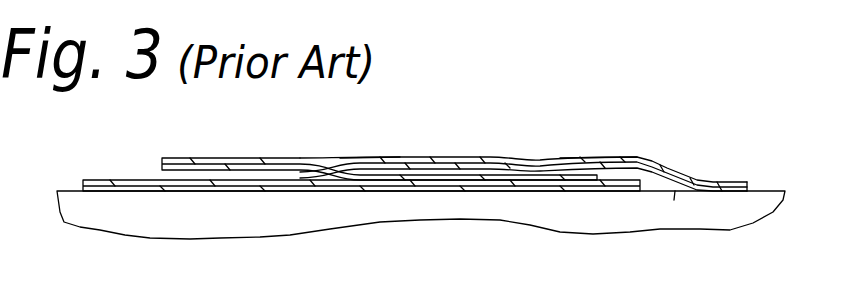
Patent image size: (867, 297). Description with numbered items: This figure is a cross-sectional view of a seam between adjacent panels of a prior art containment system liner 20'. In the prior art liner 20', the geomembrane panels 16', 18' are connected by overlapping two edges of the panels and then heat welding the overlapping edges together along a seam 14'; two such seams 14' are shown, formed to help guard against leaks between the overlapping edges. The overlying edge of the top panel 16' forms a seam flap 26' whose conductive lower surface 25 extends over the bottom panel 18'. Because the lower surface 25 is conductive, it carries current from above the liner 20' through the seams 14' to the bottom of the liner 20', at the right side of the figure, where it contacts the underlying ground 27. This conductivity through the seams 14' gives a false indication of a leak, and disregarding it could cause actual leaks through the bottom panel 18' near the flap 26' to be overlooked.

The seam 14' is at (488, 131).
The top panel 16' is at (523, 135).
The bottom panel 18' is at (338, 153).
The prior art liner 20' is at (397, 126).
The conductive lower surface 25 is at (674, 200).
The seam flap 26' is at (379, 138).
The underlying ground 27 is at (613, 227).